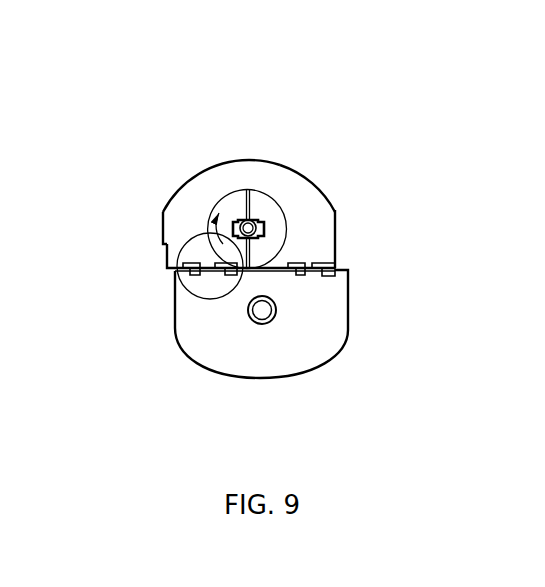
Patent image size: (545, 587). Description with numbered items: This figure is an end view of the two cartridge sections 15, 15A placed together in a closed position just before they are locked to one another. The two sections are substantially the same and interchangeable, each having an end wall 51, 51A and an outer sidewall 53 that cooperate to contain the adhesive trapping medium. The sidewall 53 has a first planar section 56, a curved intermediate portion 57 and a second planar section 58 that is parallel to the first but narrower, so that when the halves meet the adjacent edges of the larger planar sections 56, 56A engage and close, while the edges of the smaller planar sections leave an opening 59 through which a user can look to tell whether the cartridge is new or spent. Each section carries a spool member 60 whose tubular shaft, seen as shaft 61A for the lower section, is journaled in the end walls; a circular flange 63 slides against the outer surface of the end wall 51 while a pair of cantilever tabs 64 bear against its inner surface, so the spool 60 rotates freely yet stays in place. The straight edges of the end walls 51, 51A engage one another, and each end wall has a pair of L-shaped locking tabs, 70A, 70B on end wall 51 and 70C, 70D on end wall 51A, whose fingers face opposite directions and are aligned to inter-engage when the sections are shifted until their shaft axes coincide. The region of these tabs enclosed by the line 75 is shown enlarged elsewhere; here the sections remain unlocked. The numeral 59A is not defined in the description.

The cartridge section 15 is at (187, 157).
The cartridge section 15A is at (189, 375).
The first end wall 51 is at (310, 195).
The end wall 51A is at (261, 353).
The outer sidewall 53 is at (293, 150).
The first planar section 56 is at (343, 230).
The first planar section 56A is at (352, 297).
The curved intermediate portion 57 is at (266, 147).
The second planar section 58 is at (158, 223).
The opening 59 is at (145, 270).
The lower housing top surface 59A is at (293, 280).
The spool member 60 is at (285, 202).
The shaft 61A is at (272, 318).
The circular flange 63 is at (232, 190).
The cantilever tabs 64 is at (245, 219).
The locking tab 70A is at (193, 278).
The locking tab 70B is at (312, 258).
The locking tab 70C is at (228, 280).
The locking tab 70D is at (338, 265).
The line 75 is at (172, 287).